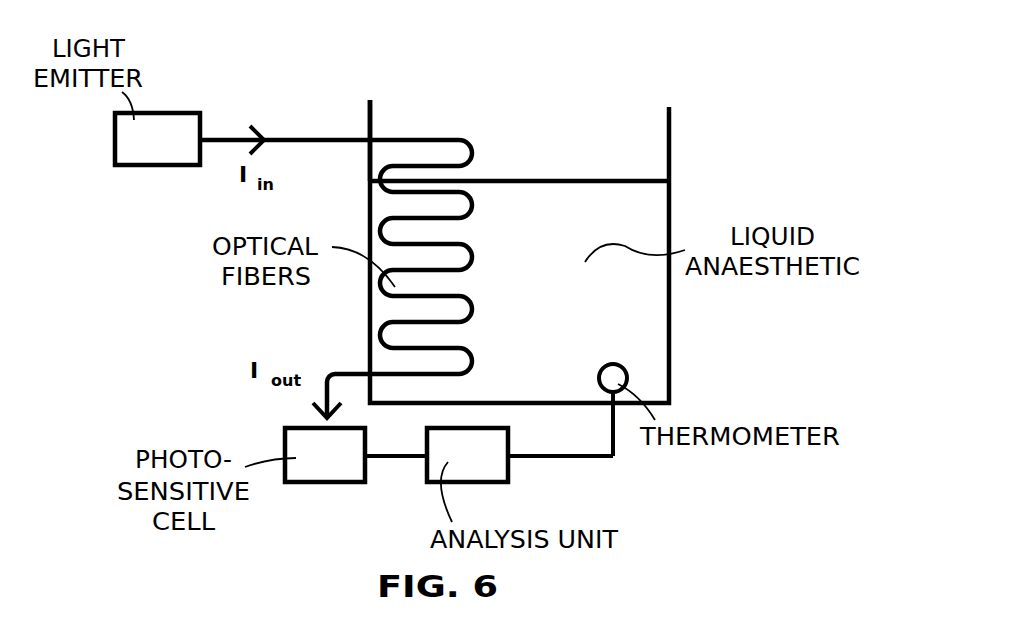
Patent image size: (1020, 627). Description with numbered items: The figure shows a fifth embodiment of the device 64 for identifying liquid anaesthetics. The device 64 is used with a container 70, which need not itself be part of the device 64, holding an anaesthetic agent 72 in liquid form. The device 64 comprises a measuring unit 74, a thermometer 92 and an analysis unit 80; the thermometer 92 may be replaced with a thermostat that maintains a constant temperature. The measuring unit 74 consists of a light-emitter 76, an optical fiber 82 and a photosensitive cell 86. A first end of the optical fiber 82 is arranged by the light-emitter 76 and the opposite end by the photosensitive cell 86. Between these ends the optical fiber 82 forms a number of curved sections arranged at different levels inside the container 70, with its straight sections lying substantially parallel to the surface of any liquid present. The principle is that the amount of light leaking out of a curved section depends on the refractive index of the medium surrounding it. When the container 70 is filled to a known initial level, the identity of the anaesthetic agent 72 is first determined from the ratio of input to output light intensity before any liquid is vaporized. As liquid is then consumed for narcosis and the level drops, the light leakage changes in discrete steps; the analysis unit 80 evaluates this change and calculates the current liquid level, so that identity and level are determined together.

The device 64 is at (569, 205).
The container 70 is at (672, 118).
The anaesthetic agent 72 is at (645, 207).
The measuring unit 74 is at (318, 86).
The light-emitter 76 is at (157, 139).
The analysis unit 80 is at (520, 455).
The optical fiber 82 is at (461, 138).
The photosensitive cell 86 is at (356, 455).
The thermometer 92 is at (628, 370).